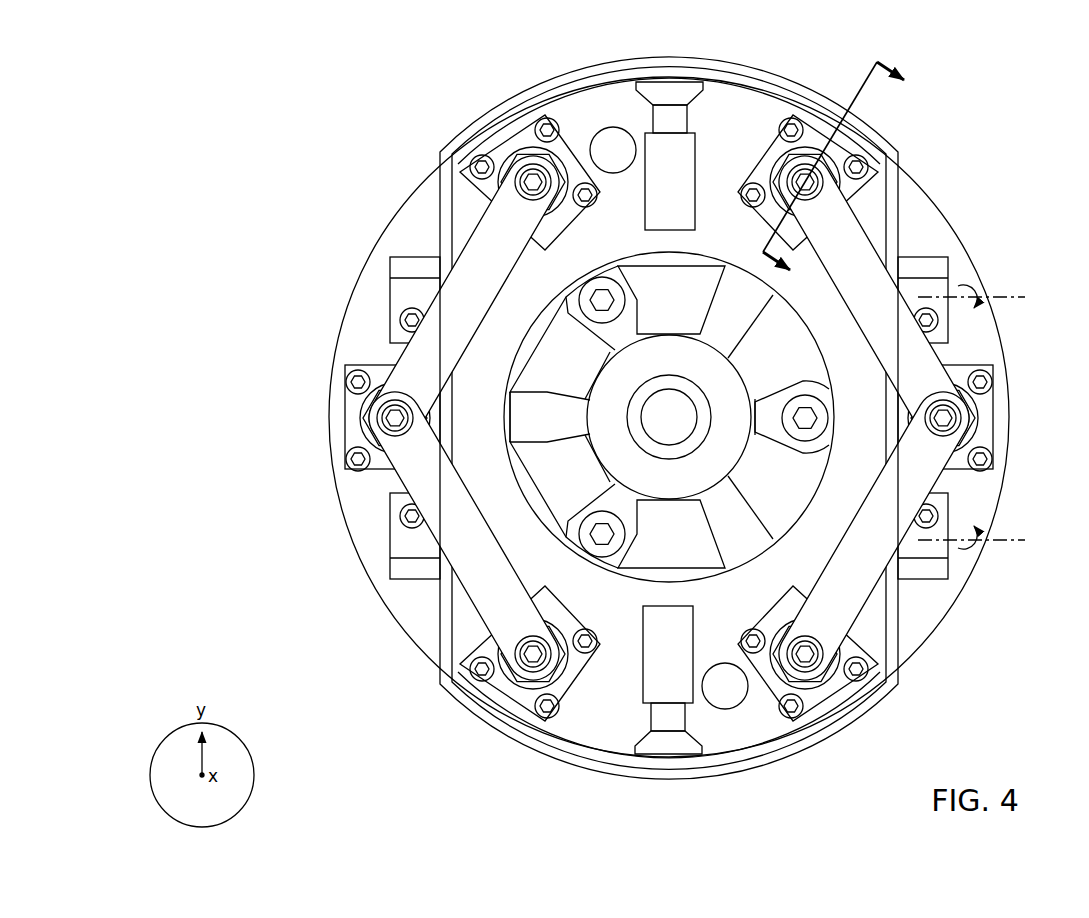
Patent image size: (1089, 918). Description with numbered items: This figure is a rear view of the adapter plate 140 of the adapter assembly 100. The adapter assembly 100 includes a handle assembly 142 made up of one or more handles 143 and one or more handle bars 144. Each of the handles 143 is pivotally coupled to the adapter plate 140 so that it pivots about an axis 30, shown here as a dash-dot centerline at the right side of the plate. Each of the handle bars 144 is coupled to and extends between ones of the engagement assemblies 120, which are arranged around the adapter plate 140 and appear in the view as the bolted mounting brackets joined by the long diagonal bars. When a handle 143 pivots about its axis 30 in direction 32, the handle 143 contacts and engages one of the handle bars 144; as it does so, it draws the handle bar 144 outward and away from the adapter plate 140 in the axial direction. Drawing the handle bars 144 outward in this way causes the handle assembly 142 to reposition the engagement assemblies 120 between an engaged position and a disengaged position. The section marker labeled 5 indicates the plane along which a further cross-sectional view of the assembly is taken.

The adapter assembly 100 is at (440, 90).
The engagement assembly 120 is at (535, 140).
The adapter plate 140 is at (940, 240).
The handle assembly 142 is at (541, 78).
The handle 143 is at (749, 70).
The handle bar 144 is at (442, 298).
The axis 30 is at (968, 297).
The direction 32 is at (985, 303).
The section line 5- 5 is at (851, 185).